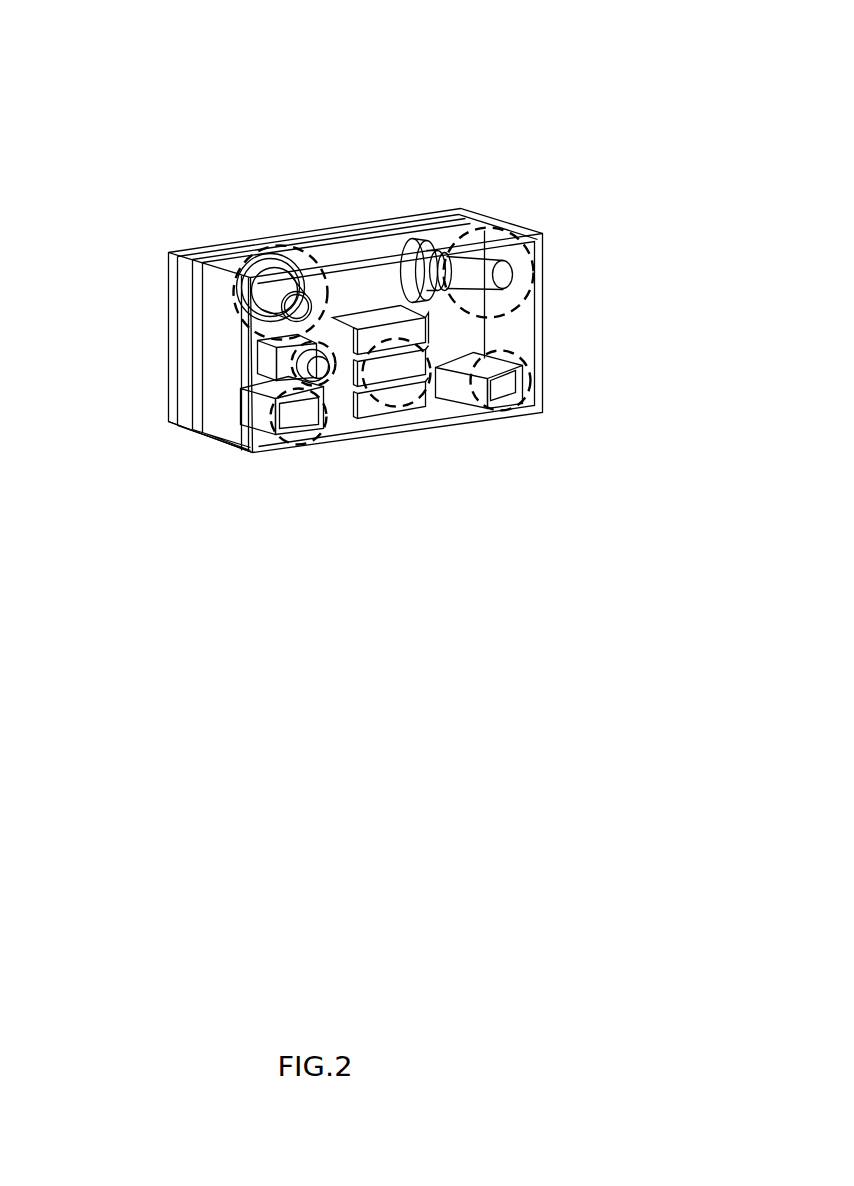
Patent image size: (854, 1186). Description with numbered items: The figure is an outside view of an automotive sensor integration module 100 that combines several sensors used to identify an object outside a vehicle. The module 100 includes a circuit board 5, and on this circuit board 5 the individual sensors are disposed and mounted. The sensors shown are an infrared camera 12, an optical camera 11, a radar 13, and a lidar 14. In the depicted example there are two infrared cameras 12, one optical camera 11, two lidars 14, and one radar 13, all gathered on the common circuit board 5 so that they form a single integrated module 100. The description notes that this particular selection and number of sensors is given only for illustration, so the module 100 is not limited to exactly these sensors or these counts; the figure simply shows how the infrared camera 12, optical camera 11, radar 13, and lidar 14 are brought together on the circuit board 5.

The automotive sensor integration module 100 is at (542, 44).
The circuit board 5 is at (208, 259).
The optical camera 11 is at (294, 360).
The infrared camera 12 is at (461, 232).
The radar 13 is at (410, 404).
The lidar 14 is at (480, 401).